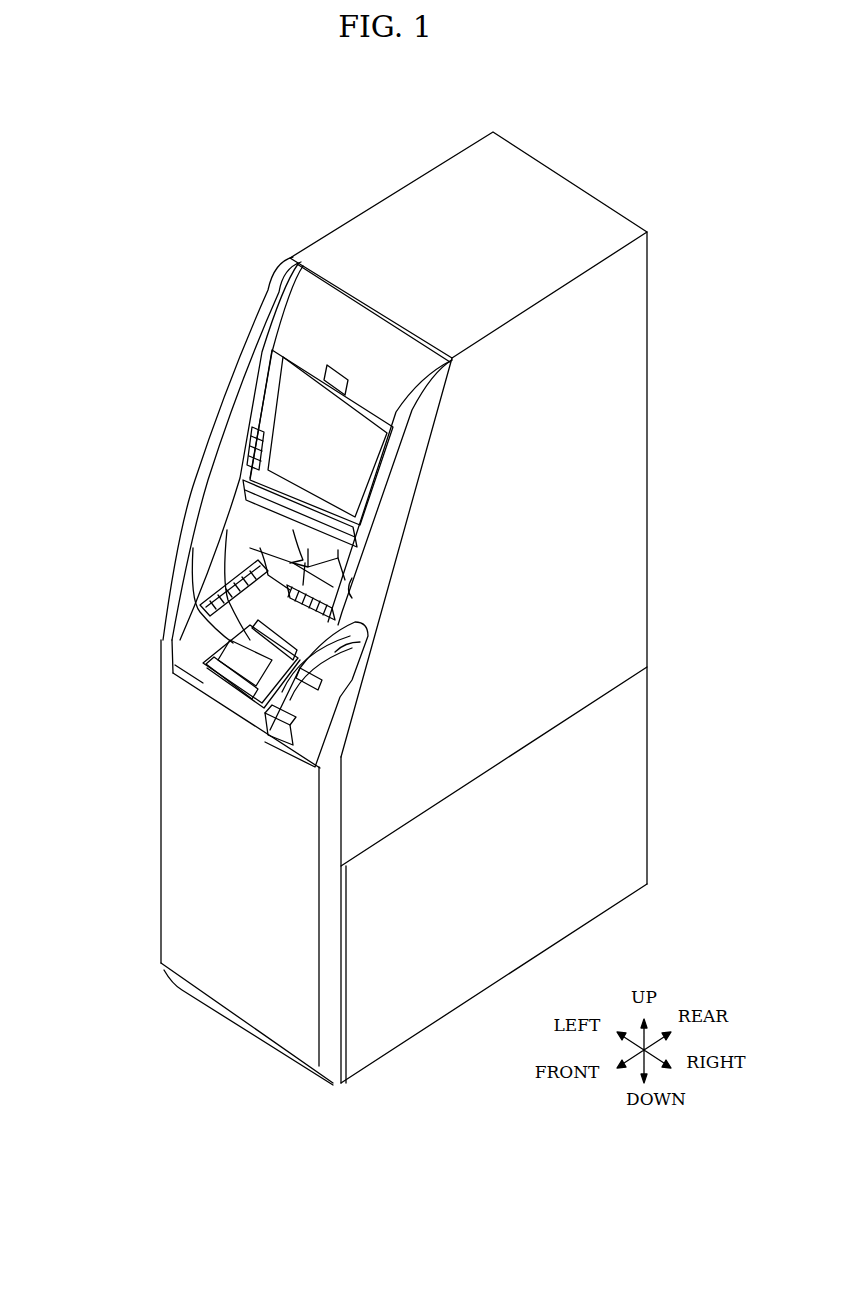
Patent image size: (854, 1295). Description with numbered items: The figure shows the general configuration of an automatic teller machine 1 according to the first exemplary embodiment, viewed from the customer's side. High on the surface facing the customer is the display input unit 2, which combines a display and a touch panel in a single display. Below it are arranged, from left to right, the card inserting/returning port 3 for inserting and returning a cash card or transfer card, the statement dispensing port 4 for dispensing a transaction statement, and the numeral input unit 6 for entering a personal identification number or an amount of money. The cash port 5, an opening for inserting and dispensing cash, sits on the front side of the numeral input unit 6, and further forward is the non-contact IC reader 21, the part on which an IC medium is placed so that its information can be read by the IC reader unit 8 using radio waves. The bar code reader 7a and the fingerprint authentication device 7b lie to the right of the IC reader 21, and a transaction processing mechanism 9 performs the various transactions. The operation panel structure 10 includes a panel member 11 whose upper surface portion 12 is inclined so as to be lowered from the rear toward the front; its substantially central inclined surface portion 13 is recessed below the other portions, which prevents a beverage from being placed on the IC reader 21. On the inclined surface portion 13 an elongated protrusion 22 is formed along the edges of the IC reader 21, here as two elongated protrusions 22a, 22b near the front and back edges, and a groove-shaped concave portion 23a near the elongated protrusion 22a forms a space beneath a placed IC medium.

The automatic teller machine 1 is at (272, 233).
The display input unit 2 is at (303, 423).
The card inserting/returning port 3 is at (360, 602).
The statement dispensing port 4 is at (235, 524).
The cash port 5 is at (215, 587).
The numeral input unit 6 is at (352, 578).
The bar code reader 7a is at (343, 743).
The fingerprint authentication device 7b is at (347, 707).
The non-contact IC reader unit 8 is at (175, 622).
The transaction processing mechanism 9 is at (623, 390).
The operation panel structure 10 is at (173, 523).
The panel member 11 is at (367, 628).
The upper surface portion 12 is at (367, 660).
The inclined surface portion 13 is at (181, 552).
The non-contact IC reader 21 is at (187, 588).
The elongated protrusion 22 is at (270, 790).
The elongated protrusion 22a is at (215, 690).
The elongated protrusion 22b is at (262, 697).
The concave portion 23a is at (173, 675).